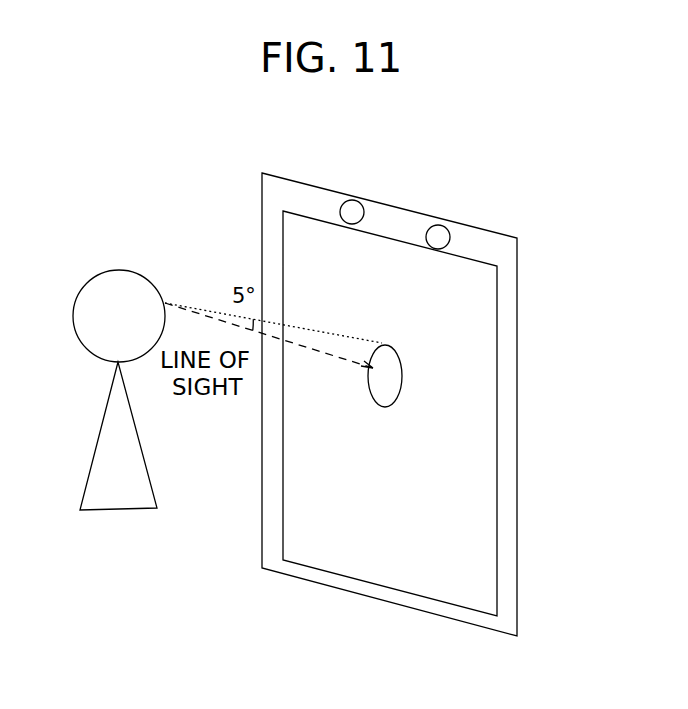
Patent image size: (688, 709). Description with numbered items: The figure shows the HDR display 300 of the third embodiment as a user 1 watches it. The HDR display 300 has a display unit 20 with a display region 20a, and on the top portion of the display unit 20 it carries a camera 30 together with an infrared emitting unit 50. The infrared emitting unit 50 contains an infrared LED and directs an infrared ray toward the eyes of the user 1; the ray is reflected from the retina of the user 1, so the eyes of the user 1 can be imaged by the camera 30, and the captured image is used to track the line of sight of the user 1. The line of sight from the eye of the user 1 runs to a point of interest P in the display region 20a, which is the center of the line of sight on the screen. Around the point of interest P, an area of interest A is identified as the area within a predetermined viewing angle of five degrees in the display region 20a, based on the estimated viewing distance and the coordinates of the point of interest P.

The user 1 is at (73, 313).
The display unit 20 is at (497, 510).
The display region 20a is at (458, 553).
The camera 30 is at (352, 200).
The infrared emitting unit 50 is at (441, 225).
The HDR display 300 is at (438, 400).
The point of interest P is at (400, 357).
The area of interest A is at (402, 385).